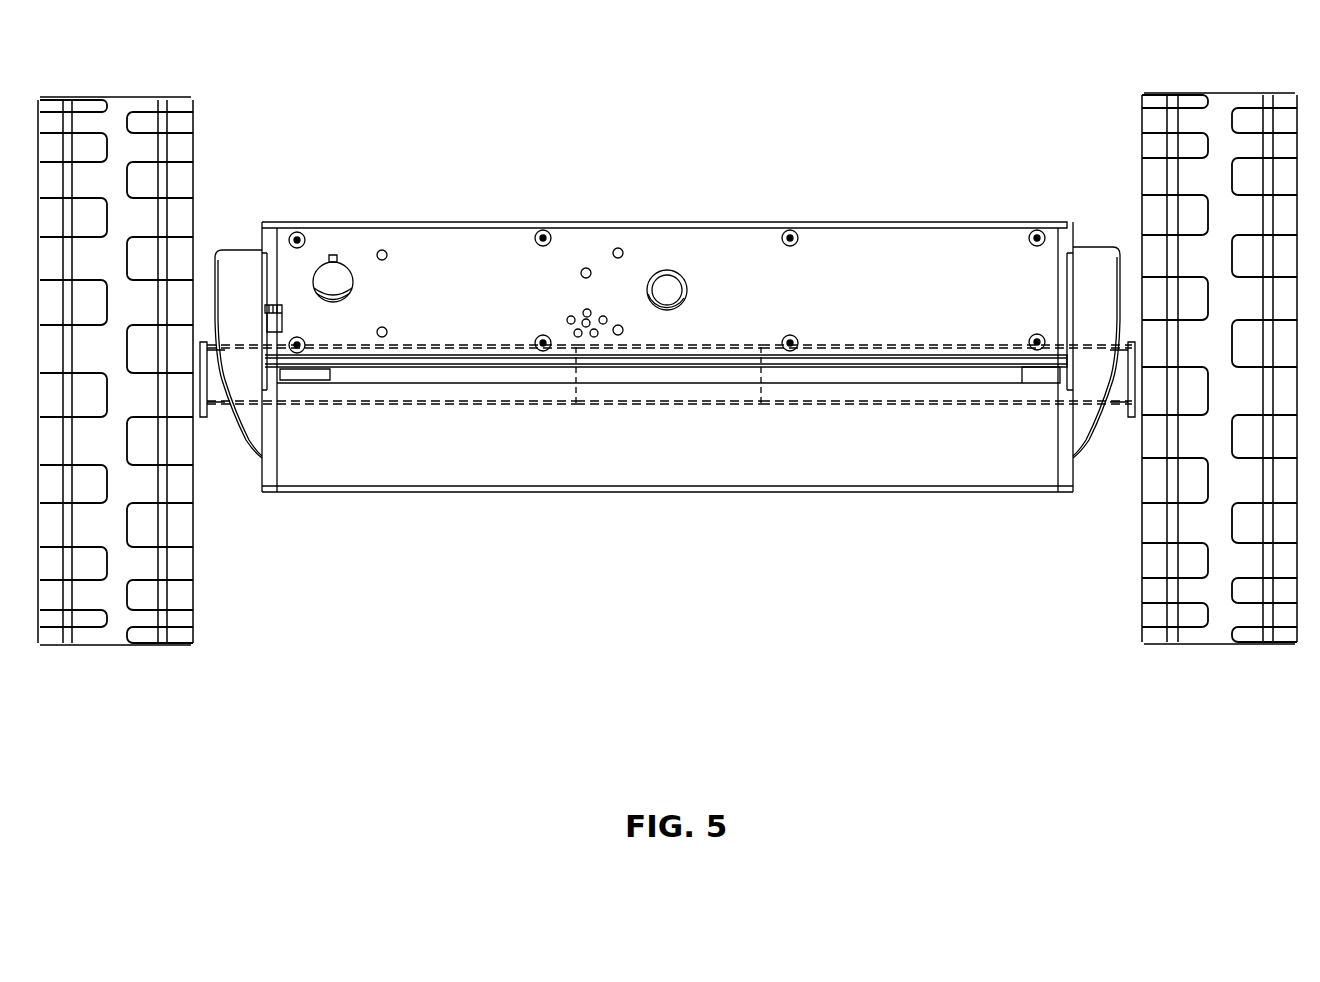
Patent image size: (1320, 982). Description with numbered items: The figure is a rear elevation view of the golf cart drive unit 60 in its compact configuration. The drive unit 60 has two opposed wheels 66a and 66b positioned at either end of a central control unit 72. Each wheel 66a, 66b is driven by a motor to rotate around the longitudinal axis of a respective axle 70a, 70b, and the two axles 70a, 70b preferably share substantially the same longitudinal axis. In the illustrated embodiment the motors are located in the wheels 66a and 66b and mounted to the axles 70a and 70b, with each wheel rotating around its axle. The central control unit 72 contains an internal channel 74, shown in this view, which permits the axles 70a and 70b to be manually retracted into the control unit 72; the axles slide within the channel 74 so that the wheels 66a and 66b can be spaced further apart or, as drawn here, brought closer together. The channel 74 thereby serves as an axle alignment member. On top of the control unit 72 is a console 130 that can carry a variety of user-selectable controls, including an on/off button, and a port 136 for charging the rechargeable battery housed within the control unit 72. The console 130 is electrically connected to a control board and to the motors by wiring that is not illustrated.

The golf cart drive unit 60 is at (697, 100).
The wheel 66a is at (150, 96).
The wheel 66b is at (1218, 95).
The console 130 is at (897, 238).
The port 136 is at (675, 289).
The central control unit 72 is at (787, 473).
The axle 70a is at (480, 395).
The axle 70b is at (947, 392).
The internal channel 74 is at (617, 397).